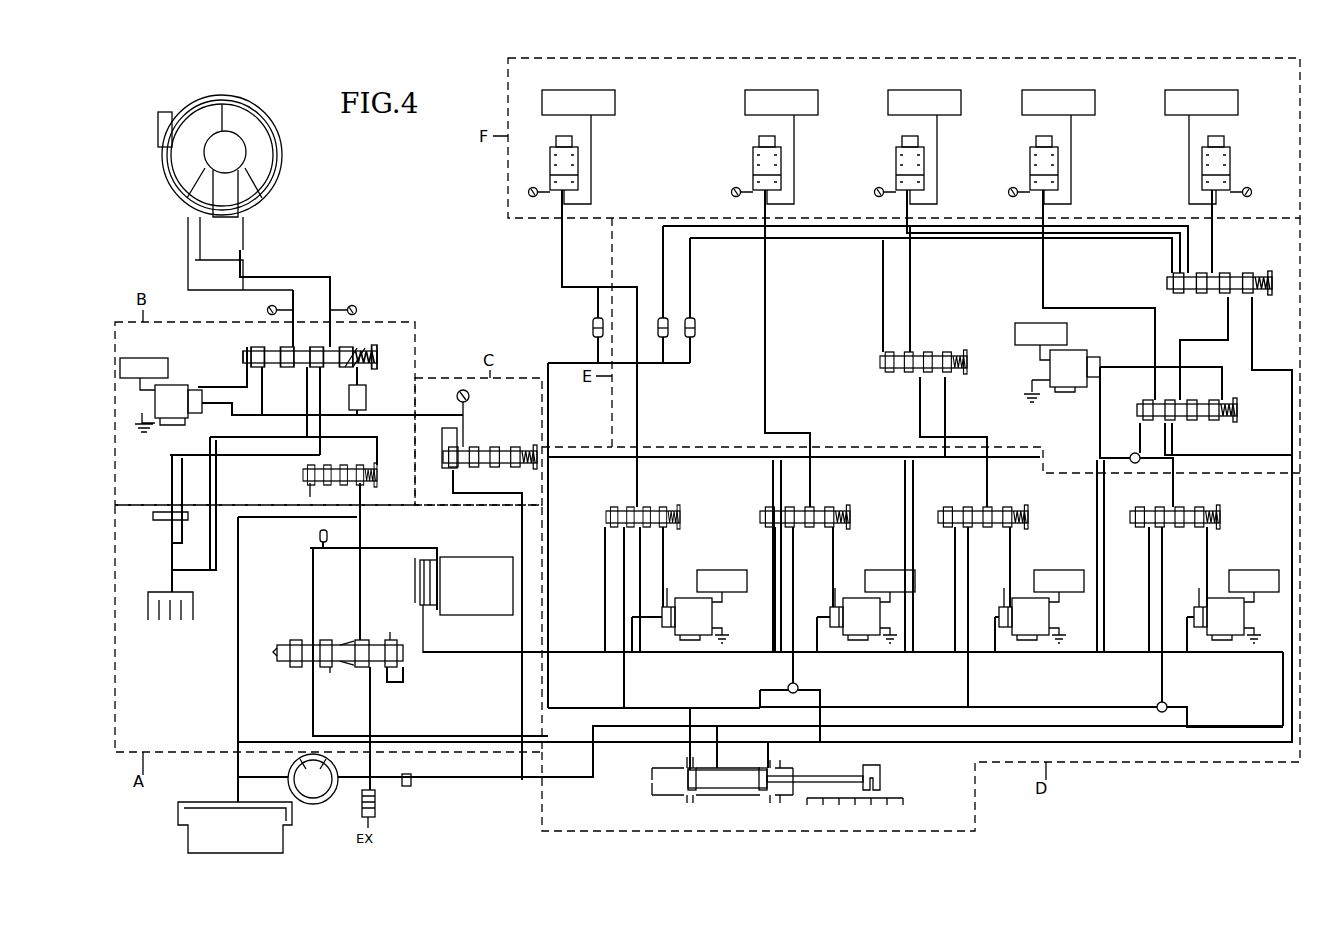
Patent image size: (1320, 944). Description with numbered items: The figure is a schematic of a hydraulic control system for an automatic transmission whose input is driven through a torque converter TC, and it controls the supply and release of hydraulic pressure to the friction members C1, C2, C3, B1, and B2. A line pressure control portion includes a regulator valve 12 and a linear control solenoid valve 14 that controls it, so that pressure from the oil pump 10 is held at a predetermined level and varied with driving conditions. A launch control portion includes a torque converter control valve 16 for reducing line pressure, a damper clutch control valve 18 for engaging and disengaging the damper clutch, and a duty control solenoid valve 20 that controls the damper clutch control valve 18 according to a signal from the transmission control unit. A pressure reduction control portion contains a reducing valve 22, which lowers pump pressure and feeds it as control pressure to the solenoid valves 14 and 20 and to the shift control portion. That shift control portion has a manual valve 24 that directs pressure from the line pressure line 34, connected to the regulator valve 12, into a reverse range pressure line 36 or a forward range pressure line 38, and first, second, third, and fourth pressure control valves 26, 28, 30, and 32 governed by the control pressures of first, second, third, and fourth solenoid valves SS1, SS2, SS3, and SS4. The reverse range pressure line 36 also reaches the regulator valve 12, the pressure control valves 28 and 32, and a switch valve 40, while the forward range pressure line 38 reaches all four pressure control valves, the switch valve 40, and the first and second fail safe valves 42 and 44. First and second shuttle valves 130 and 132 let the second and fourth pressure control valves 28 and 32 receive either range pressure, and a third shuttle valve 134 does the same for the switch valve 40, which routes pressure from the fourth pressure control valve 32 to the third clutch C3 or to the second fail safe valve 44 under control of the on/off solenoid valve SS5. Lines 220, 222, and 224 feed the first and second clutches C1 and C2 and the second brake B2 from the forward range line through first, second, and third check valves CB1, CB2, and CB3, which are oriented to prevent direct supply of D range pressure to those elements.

The oil pump 10 is at (313, 798).
The regulator valve 12 is at (290, 632).
The linear control solenoid valve 14 is at (480, 556).
The torque converter control valve 16 is at (375, 472).
The damper clutch control valve 18 is at (368, 340).
The duty control solenoid valve 20 is at (185, 383).
The reducing valve 22 is at (502, 445).
The manual valve 24 is at (914, 784).
The first pressure control valve 26 is at (592, 515).
The second pressure control valve 28 is at (767, 515).
The third pressure control valve 30 is at (943, 515).
The fourth pressure control valve 32 is at (1137, 515).
The line pressure line 34 is at (653, 723).
The reverse range pressure line 36 is at (615, 742).
The forward range pressure line 38 is at (688, 757).
The switch valve 40 is at (1238, 425).
The first fail safe valve 42 is at (940, 345).
The second fail safe valve 44 is at (1240, 270).
The first shuttle valve 130 is at (798, 686).
The second shuttle valve 132 is at (1167, 704).
The third shuttle valve 134 is at (1130, 455).
The line 220 is at (603, 283).
The line 222 is at (696, 365).
The line 224 is at (900, 210).
The torque converter TC is at (285, 160).
The first clutch C1 is at (592, 90).
The second clutch C2 is at (795, 90).
The third clutch C3 is at (1062, 90).
The first brake B1 is at (1204, 90).
The second brake B2 is at (927, 90).
The first check valve CB1 is at (590, 326).
The second check valve CB2 is at (698, 335).
The third check valve CB3 is at (656, 315).
The first solenoid valve SS1 is at (718, 617).
The second solenoid valve SS2 is at (886, 617).
The third solenoid valve SS3 is at (1055, 617).
The fourth solenoid valve SS4 is at (1250, 617).
The on/off solenoid valve SS5 is at (1050, 366).